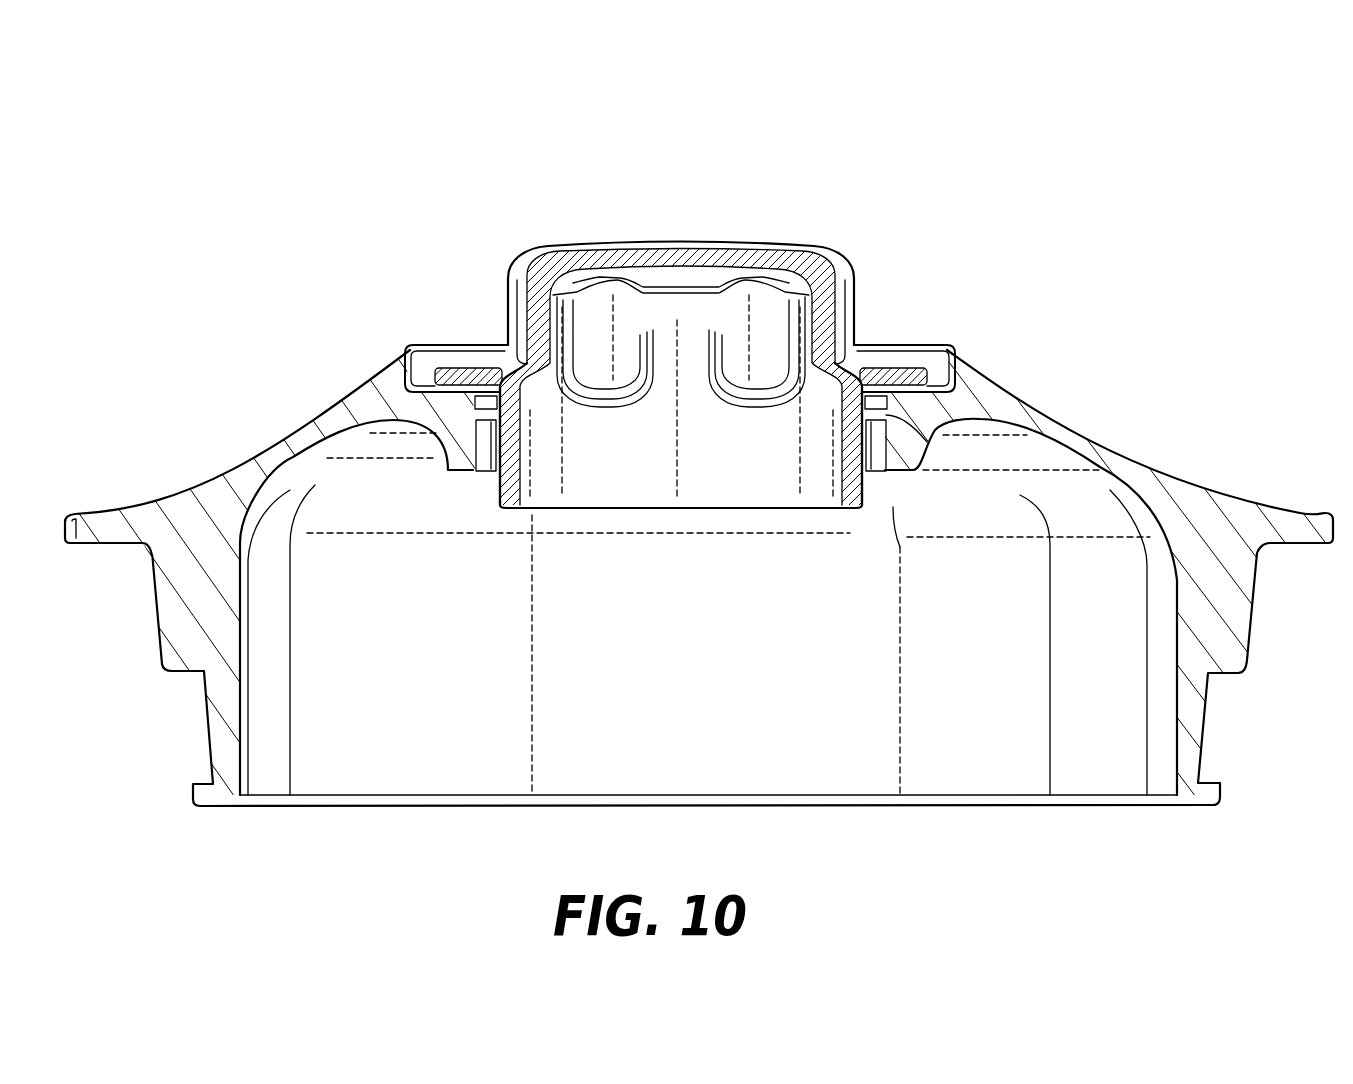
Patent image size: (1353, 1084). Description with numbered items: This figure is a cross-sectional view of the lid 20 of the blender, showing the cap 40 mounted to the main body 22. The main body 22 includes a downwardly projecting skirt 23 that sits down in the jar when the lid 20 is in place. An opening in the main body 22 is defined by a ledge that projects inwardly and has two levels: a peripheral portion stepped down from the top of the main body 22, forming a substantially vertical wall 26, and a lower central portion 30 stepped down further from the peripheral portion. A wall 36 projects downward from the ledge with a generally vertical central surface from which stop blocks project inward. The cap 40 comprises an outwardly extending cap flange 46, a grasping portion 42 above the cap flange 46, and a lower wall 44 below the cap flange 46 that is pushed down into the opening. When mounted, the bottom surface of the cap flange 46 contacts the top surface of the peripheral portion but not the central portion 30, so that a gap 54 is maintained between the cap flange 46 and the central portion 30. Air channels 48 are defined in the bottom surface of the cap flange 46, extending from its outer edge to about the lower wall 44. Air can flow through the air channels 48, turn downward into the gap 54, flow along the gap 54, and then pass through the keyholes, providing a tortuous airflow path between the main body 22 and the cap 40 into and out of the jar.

The lid 20 is at (963, 163).
The main body 22 is at (1068, 433).
The skirt 23 is at (1195, 730).
The wall 26 is at (431, 365).
The central portion 30 is at (478, 473).
The wall 36 is at (460, 458).
The cap 40 is at (858, 233).
The grasping portion 42 is at (747, 247).
The lower wall 44 is at (862, 508).
The cap flange 46 is at (900, 372).
The air channels 48 is at (375, 380).
The gap 54 is at (486, 396).